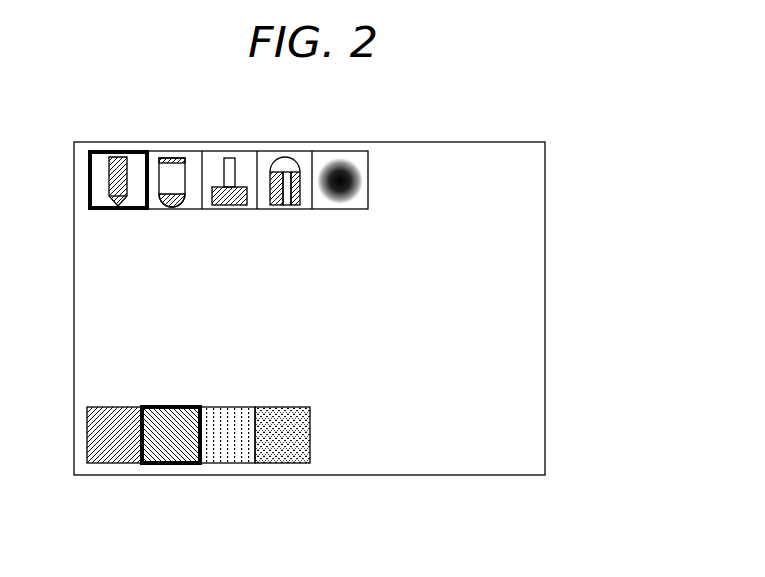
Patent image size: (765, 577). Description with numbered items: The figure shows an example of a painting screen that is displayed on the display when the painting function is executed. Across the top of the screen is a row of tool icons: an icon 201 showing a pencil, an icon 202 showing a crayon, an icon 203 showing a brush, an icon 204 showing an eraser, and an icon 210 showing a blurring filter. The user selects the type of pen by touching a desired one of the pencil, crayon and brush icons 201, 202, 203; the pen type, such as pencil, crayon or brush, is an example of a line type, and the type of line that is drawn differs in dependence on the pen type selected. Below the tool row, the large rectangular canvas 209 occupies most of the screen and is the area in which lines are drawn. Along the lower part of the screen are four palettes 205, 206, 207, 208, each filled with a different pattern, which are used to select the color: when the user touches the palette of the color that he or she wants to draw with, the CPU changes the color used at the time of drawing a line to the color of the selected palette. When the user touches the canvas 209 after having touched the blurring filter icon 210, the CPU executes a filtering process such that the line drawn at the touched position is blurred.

The icon showing a pencil 201 is at (122, 152).
The icon showing a crayon 202 is at (168, 152).
The icon showing a brush 203 is at (231, 152).
The icon showing an eraser 204 is at (281, 152).
The icon showing a blurring filter 210 is at (338, 152).
The canvas 209 is at (512, 142).
The palette 205 is at (113, 463).
The palette 206 is at (170, 463).
The palette 207 is at (232, 463).
The palette 208 is at (282, 463).